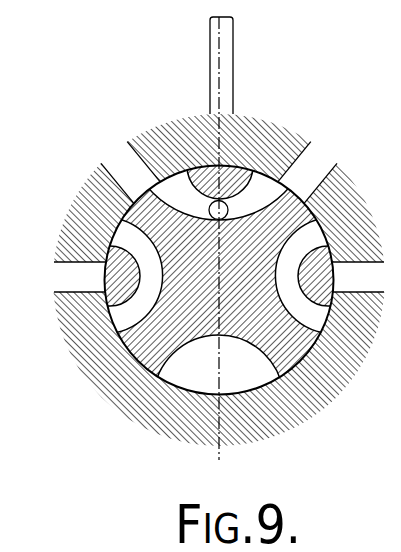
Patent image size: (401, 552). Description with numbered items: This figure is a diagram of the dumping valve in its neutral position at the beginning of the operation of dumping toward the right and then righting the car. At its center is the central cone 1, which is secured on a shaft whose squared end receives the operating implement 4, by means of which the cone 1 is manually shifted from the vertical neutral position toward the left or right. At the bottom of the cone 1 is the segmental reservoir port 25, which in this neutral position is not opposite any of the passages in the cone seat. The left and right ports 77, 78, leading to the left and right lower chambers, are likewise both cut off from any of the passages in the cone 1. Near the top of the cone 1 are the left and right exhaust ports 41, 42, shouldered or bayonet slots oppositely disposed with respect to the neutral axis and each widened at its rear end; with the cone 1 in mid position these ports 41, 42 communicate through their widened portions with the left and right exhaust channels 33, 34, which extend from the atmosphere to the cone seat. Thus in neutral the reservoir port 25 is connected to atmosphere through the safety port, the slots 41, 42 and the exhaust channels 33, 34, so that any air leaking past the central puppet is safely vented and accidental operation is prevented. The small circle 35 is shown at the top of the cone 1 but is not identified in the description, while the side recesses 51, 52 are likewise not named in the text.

The central cone 1 is at (219, 249).
The operating implement 4 is at (233, 49).
The reservoir port 25 is at (219, 400).
The left exhaust channel 33 is at (128, 169).
The right exhaust channel 34 is at (309, 169).
The pivot pin 35 is at (218, 210).
The left exhaust port 41 is at (172, 173).
The right exhaust port 42 is at (265, 173).
The left chamber 51 is at (105, 276).
The right chamber 52 is at (333, 276).
The left port 77 is at (84, 277).
The right port 78 is at (353, 277).